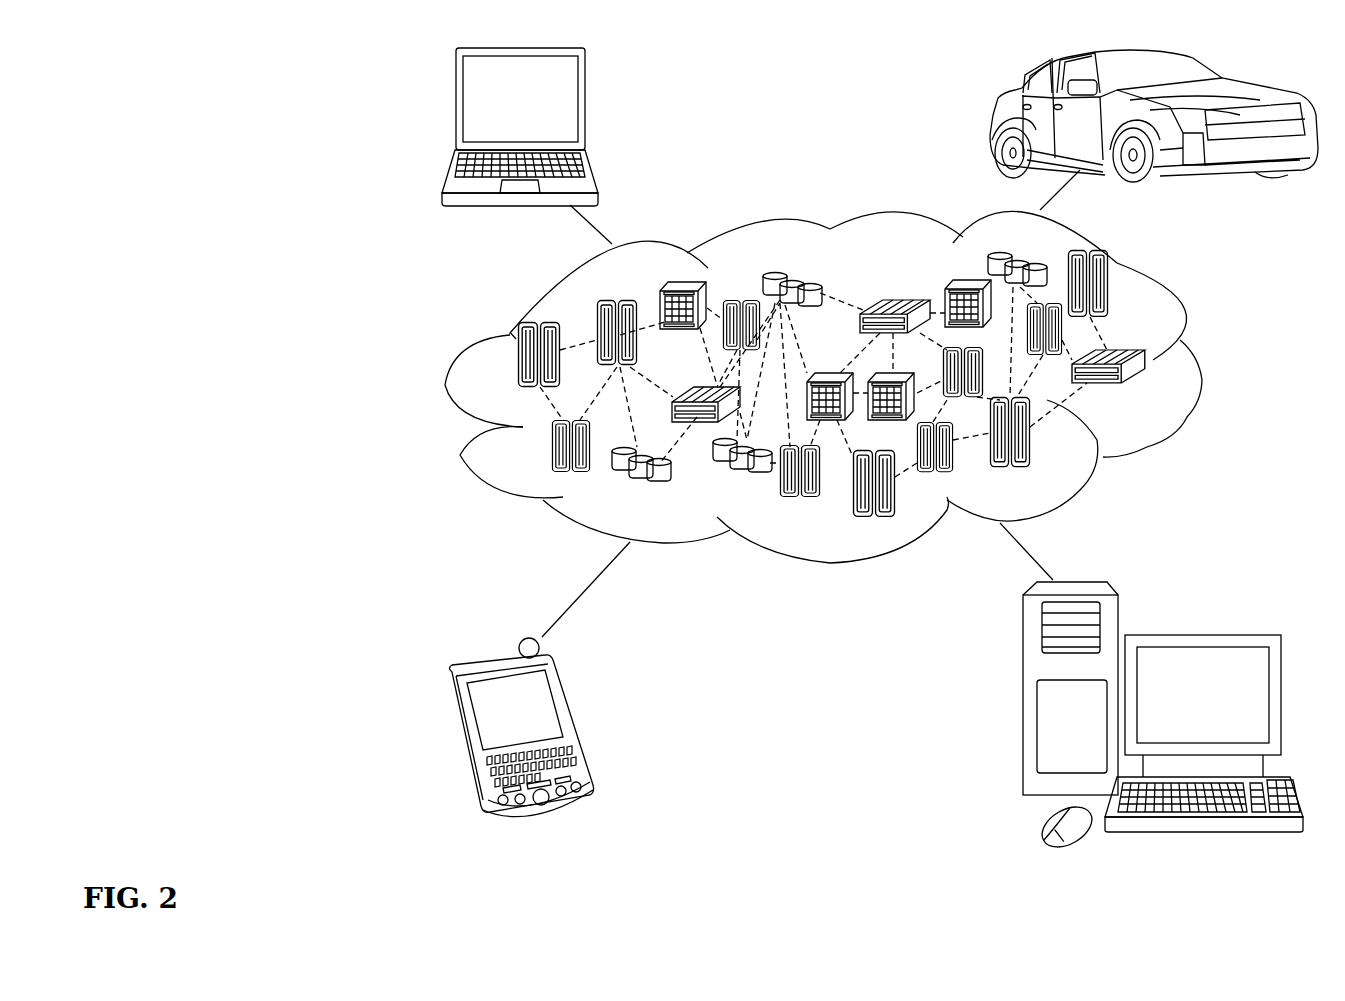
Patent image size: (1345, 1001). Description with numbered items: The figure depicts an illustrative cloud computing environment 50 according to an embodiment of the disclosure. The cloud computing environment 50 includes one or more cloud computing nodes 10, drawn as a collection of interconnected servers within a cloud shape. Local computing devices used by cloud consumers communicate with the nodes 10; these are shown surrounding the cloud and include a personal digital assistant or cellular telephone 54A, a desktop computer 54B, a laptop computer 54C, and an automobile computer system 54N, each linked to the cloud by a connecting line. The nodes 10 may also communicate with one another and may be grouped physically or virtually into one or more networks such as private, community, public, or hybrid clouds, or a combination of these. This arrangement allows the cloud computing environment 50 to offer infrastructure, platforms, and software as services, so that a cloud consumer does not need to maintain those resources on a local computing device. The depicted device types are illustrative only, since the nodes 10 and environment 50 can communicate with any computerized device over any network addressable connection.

The cloud computing node 10 is at (1146, 392).
The cloud computing environment 50 is at (852, 387).
The personal digital assistant (PDA) or cellular telephone 54A is at (573, 720).
The desktop computer 54B is at (1201, 635).
The laptop computer 54C is at (585, 106).
The automobile computer system 54N is at (998, 121).